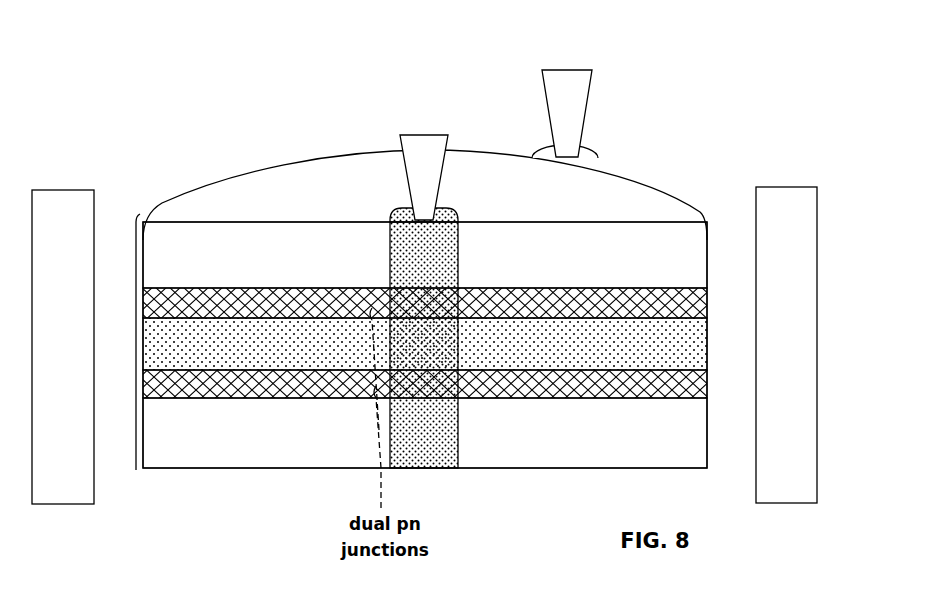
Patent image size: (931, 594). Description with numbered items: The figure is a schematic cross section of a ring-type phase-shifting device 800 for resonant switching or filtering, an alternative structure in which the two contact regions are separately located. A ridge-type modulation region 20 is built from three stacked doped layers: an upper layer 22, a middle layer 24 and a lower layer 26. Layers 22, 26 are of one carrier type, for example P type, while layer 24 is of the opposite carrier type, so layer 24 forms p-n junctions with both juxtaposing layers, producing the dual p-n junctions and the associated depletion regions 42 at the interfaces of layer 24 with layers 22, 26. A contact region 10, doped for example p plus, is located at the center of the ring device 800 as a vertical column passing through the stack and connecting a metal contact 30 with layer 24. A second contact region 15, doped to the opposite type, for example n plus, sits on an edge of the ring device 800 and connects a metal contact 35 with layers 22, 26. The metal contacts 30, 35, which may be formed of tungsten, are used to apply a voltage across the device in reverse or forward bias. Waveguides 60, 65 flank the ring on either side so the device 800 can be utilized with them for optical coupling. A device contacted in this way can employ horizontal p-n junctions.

The device 800 is at (142, 96).
The ridge-type modulation region 20 is at (136, 352).
The waveguide 60 is at (63, 347).
The waveguide 65 is at (786, 345).
The layer 22 is at (425, 255).
The layer 24 is at (425, 344).
The layer 26 is at (425, 433).
The depletion regions 42 is at (712, 388).
The contact region 10 is at (424, 338).
The metal contact 30 is at (424, 177).
The metal contact 35 is at (565, 114).
The contact region 15 is at (594, 157).